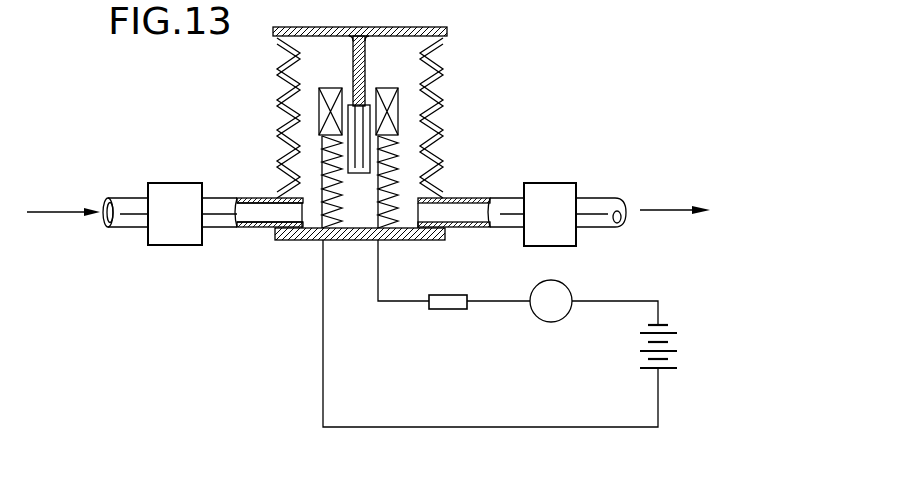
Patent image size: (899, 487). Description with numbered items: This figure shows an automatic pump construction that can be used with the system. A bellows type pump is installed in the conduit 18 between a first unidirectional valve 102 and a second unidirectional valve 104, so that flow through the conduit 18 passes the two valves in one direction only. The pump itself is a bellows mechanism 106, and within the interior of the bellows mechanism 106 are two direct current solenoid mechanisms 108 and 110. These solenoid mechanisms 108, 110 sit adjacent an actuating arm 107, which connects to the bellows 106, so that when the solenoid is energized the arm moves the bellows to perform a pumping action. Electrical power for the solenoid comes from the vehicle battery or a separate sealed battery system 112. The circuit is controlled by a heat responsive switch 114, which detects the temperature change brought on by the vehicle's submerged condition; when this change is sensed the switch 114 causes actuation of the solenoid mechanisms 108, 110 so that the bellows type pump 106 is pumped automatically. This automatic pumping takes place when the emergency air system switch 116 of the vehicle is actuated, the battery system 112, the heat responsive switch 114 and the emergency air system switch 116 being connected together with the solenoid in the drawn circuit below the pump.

The conduit 18 is at (500, 205).
The unidirectional valve 102 is at (186, 232).
The unidirectional valve 104 is at (562, 233).
The bellows mechanism 106 is at (447, 56).
The actuating arm 107 is at (361, 66).
The direct current solenoid mechanism 108 is at (320, 110).
The direct current solenoid mechanism 110 is at (400, 108).
The battery system 112 is at (668, 351).
The heat responsive switch 114 is at (555, 305).
The emergency air system switch 116 is at (449, 300).